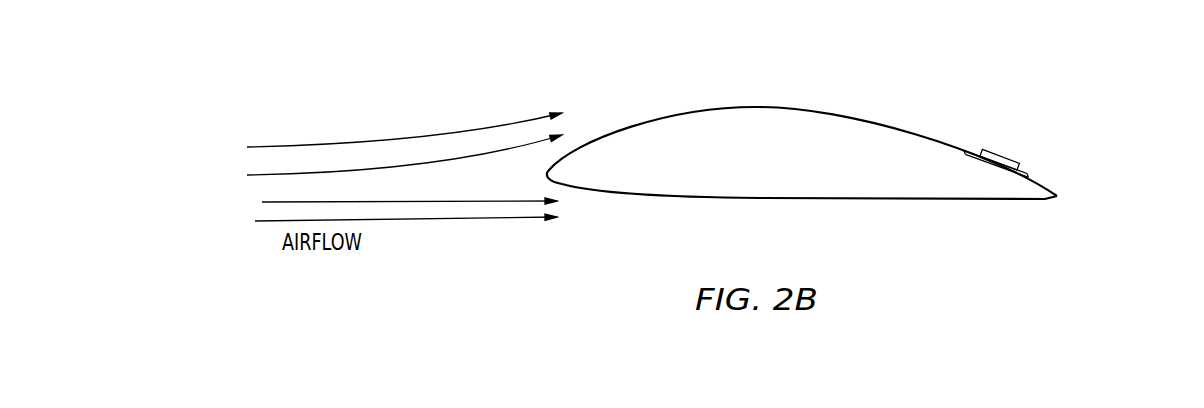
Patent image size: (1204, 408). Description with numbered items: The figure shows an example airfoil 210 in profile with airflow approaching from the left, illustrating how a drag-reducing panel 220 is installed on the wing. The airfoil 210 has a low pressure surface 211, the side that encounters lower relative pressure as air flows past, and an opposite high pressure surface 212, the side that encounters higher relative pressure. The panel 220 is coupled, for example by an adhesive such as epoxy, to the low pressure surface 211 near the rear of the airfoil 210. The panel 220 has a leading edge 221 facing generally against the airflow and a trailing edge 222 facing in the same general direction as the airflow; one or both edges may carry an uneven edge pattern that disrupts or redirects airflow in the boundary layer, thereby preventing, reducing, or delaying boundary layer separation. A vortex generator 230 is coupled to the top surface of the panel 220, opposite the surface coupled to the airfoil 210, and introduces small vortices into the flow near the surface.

The airfoil 210 is at (782, 134).
The low pressure surface 211 is at (713, 110).
The high pressure surface 212 is at (745, 197).
The panel 220 is at (1012, 112).
The leading edge 221 is at (960, 147).
The trailing edge 222 is at (1036, 178).
The vortex generator 230 is at (995, 155).